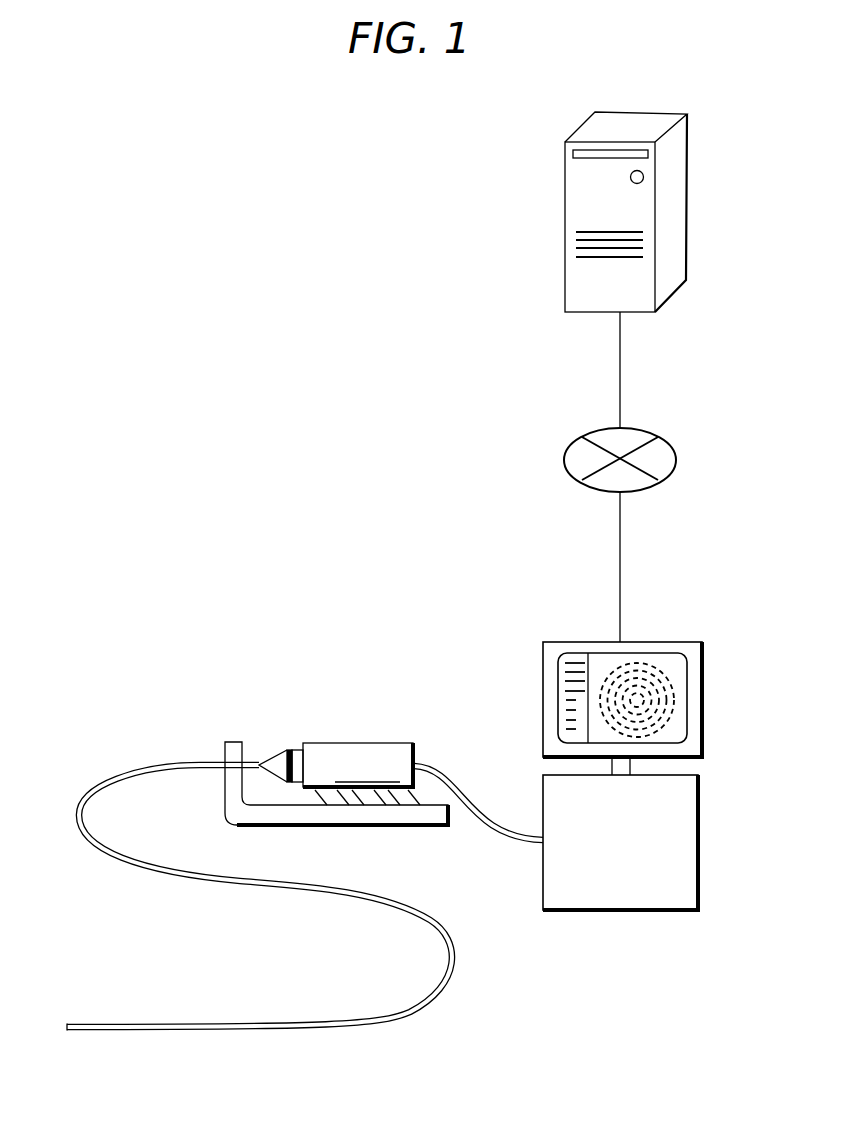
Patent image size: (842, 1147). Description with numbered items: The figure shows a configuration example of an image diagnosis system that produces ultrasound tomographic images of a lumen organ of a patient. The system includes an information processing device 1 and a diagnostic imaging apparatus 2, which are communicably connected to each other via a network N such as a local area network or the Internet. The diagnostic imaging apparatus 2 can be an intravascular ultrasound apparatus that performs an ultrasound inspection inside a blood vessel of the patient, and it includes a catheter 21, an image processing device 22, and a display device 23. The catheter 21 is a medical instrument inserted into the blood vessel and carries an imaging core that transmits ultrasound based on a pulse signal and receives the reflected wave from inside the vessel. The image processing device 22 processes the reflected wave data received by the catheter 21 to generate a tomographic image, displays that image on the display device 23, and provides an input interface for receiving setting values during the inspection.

The information processing device 1 is at (637, 111).
The network N is at (653, 433).
The diagnostic imaging apparatus 2 is at (242, 707).
The catheter 21 is at (180, 763).
The image processing device 22 is at (700, 822).
The display device 23 is at (703, 692).